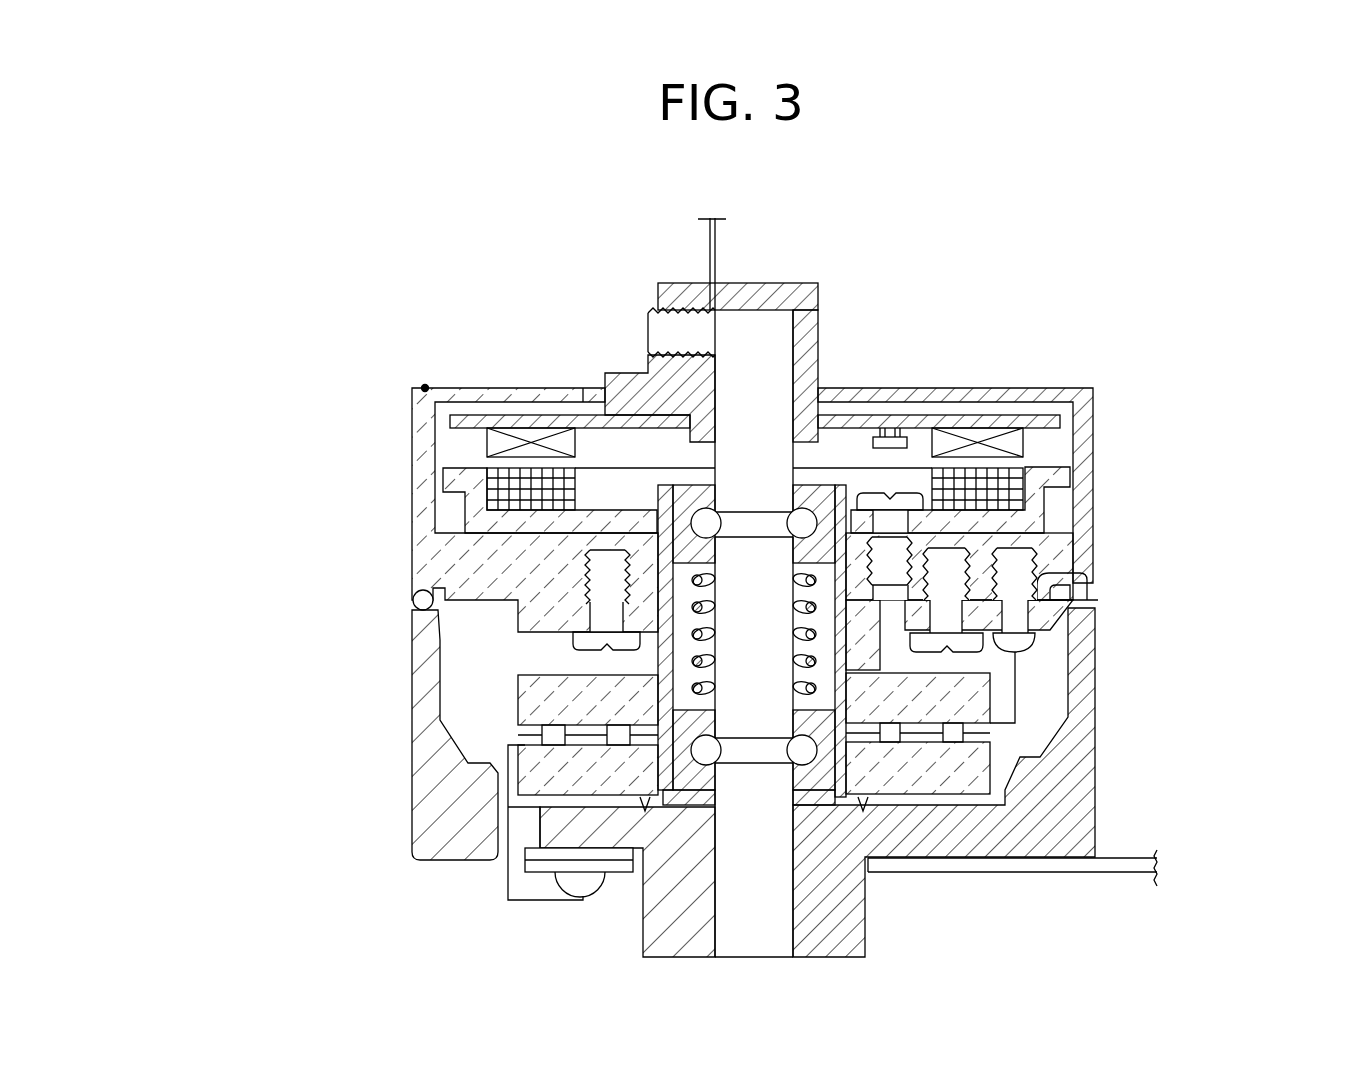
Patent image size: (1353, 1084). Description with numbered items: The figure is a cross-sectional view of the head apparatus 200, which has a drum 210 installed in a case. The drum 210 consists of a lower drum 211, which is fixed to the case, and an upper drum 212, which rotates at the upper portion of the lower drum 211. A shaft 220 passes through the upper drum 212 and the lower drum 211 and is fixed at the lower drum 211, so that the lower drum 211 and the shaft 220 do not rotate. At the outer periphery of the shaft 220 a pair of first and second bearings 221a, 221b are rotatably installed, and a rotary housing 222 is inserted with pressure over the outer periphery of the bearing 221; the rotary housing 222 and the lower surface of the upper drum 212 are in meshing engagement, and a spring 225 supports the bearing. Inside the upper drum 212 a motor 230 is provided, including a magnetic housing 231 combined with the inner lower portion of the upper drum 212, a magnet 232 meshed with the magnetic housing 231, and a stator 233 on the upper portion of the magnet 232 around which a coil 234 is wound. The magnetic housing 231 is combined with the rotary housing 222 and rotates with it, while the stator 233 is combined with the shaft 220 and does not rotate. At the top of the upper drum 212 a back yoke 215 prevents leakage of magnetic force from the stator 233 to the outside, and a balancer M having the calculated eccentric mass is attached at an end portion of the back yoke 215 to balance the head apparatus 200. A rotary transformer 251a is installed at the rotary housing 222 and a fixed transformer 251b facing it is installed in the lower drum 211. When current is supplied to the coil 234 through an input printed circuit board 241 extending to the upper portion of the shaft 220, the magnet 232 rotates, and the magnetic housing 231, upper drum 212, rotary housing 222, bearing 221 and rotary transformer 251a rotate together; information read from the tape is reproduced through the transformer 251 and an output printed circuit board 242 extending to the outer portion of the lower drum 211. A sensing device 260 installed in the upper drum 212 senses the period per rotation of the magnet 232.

The head apparatus 200 is at (336, 314).
The balancer M is at (425, 386).
The drum 210 is at (228, 572).
The lower drum 211 is at (425, 690).
The upper drum 212 is at (455, 572).
The back yoke 215 is at (1033, 388).
The shaft 220 is at (770, 340).
The bearing 221 is at (1237, 535).
The first bearing 221a is at (830, 505).
The second bearing 221b is at (815, 775).
The rotary housing 222 is at (555, 622).
The spring 225 is at (698, 668).
The motor 230 is at (1217, 395).
The magnetic housing 231 is at (1035, 505).
The magnet 232 is at (1005, 488).
The stator 233 is at (1060, 421).
The coil 234 is at (1020, 445).
The input printed circuit board 241 is at (715, 258).
The output printed circuit board 242 is at (1033, 873).
The transformer 251 is at (228, 745).
The rotary transformer 251a is at (540, 690).
The fixed transformer 251b is at (545, 780).
The sensing device 260 is at (890, 437).